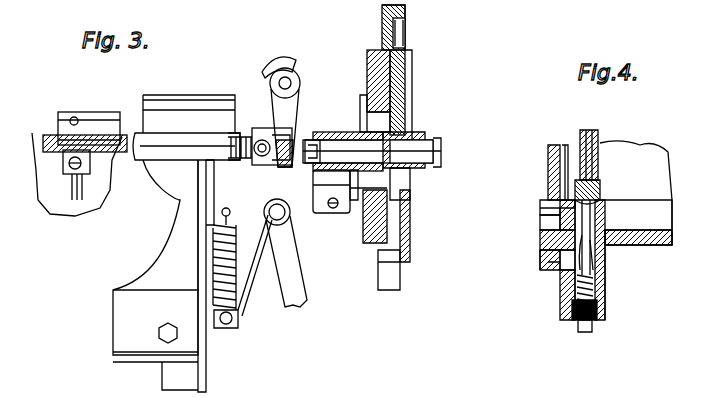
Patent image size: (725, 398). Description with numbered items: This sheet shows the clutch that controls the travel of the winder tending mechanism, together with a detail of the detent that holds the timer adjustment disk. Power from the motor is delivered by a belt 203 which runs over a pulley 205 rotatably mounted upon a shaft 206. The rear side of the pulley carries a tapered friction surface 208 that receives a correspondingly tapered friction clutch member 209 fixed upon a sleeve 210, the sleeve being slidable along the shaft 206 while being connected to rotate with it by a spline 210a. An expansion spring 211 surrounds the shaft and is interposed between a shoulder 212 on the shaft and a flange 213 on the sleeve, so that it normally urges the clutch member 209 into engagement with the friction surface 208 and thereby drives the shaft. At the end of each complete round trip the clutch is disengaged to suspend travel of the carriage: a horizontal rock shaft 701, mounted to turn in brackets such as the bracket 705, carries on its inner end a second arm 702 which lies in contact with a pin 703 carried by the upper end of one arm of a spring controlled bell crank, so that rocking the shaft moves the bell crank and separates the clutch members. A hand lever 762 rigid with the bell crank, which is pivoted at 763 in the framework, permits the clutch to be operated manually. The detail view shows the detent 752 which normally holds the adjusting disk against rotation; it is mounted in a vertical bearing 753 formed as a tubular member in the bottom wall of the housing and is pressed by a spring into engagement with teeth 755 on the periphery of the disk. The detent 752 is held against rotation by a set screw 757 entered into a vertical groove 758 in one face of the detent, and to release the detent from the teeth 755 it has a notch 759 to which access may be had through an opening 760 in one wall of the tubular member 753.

In FIG. 3, the belt 203 is at (406, 6).
In FIG. 3, the pulley 205 is at (406, 40).
In FIG. 3, the shaft 206 is at (395, 146).
In FIG. 3, the tapered friction surface 208 is at (408, 70).
In FIG. 3, the friction clutch member 209 is at (368, 62).
In FIG. 3, the sleeve 210 is at (345, 130).
In FIG. 3, the spline 210a is at (325, 132).
In FIG. 3, the expansion spring 211 is at (227, 158).
In FIG. 3, the shoulder 212 is at (205, 132).
In FIG. 3, the flange 213 is at (249, 135).
In FIG. 3, the rock shaft 701 is at (287, 82).
In FIG. 3, the second arm 702 is at (300, 205).
In FIG. 3, the pin 703 is at (262, 167).
In FIG. 3, the bracket 705 is at (262, 63).
In FIG. 3, the hand lever 762 is at (298, 290).
In FIG. 3, the pivot 763 is at (262, 208).
In FIG. 4, the detent 752 is at (600, 188).
In FIG. 4, the vertical bearing 753 is at (600, 292).
In FIG. 4, the teeth 755 is at (598, 188).
In FIG. 4, the set screw 757 is at (570, 268).
In FIG. 4, the vertical groove 758 is at (588, 245).
In FIG. 4, the notch 759 is at (558, 222).
In FIG. 4, the opening 760 is at (548, 212).